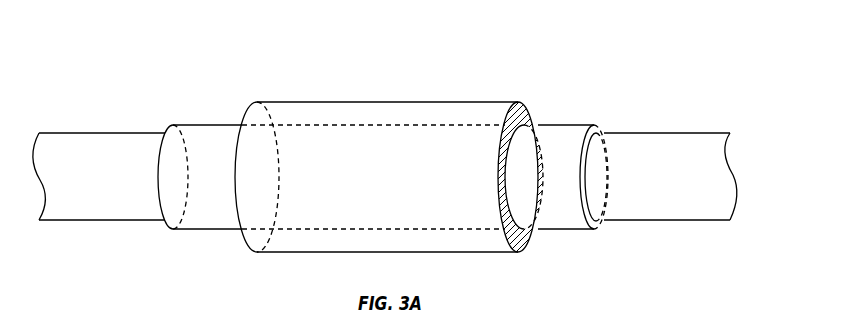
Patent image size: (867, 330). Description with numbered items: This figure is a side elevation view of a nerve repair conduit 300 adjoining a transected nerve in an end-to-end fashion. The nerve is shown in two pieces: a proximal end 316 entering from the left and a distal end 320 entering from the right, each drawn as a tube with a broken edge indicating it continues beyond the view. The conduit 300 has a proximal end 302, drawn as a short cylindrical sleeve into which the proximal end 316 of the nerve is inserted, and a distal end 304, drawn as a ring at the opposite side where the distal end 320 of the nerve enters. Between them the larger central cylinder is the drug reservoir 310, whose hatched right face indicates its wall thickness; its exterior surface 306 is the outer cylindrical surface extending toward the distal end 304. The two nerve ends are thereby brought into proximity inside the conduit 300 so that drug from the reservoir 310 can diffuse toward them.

The nerve repair conduit 300 is at (448, 57).
The proximal end 302 is at (213, 122).
The distal end 304 is at (605, 128).
The exterior surface 306 is at (567, 122).
The drug reservoir 310 is at (333, 112).
The proximal end 316 is at (110, 147).
The distal end 320 is at (672, 147).